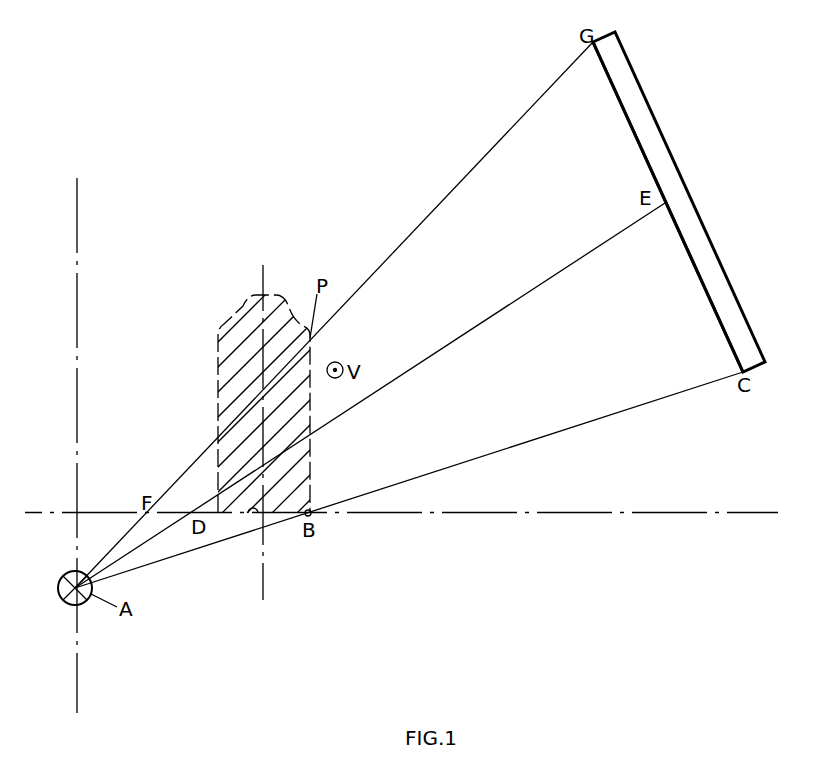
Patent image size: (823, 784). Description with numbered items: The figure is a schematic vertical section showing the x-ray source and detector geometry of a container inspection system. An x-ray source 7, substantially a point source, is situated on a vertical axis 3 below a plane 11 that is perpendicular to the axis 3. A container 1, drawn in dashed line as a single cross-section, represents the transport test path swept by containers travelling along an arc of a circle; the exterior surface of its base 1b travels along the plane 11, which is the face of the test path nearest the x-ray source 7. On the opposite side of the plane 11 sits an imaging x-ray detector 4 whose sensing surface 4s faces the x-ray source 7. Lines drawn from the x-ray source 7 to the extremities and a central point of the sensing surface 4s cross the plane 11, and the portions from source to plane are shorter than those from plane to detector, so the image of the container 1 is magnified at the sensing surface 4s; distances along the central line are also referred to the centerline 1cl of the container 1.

The container 1 is at (228, 362).
The base 1b is at (250, 514).
The centerline 1cl is at (264, 578).
The vertical axis 3 is at (78, 199).
The imaging x-ray detector 4 is at (708, 268).
The sensing surface 4s is at (634, 133).
The x-ray source 7 is at (60, 596).
The plane 11 is at (658, 513).